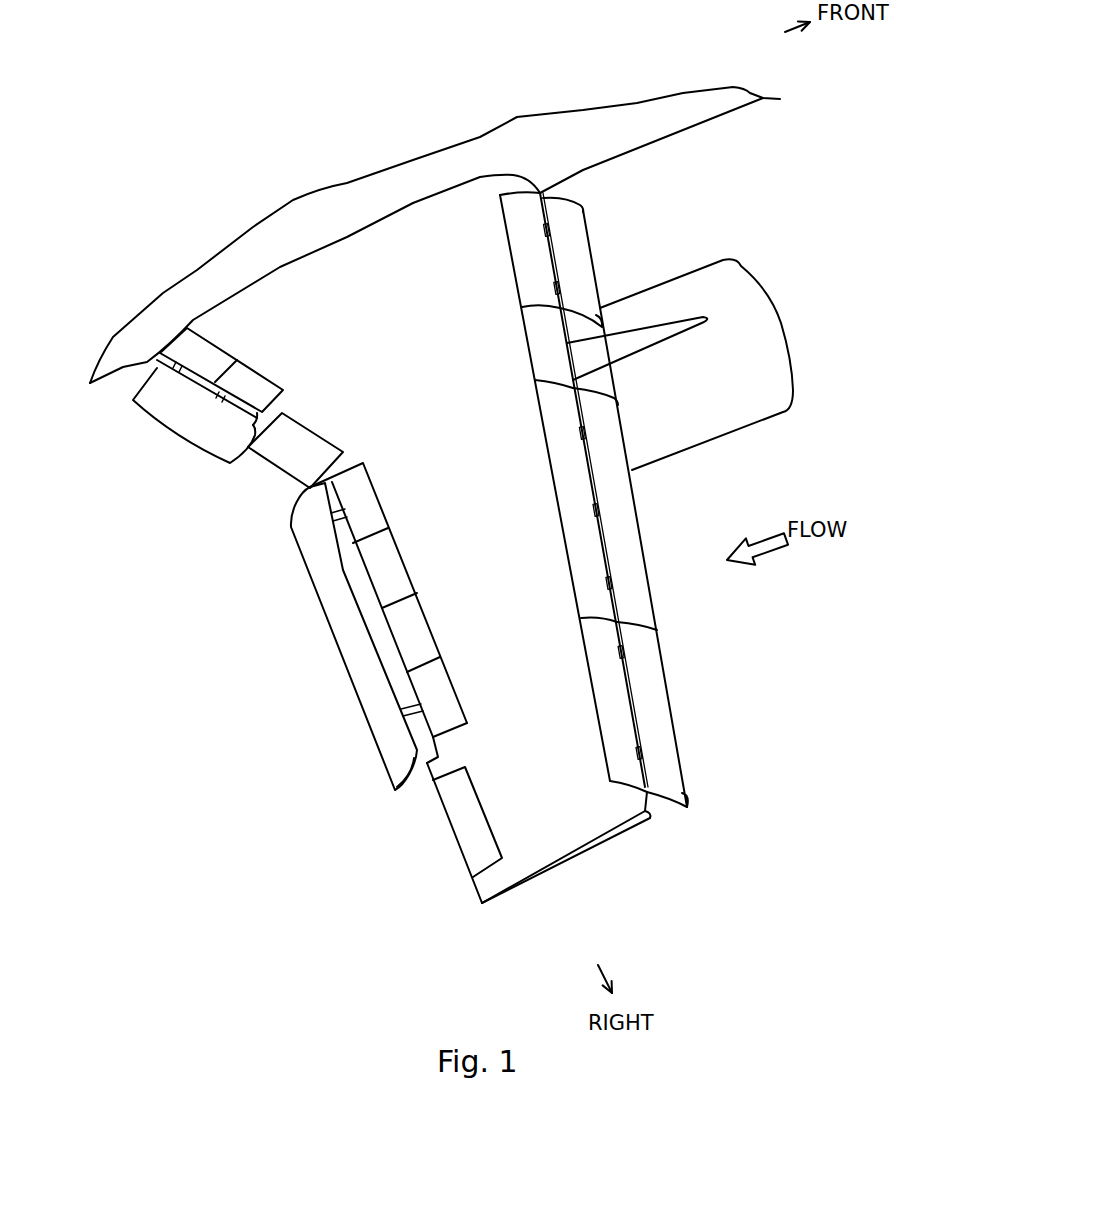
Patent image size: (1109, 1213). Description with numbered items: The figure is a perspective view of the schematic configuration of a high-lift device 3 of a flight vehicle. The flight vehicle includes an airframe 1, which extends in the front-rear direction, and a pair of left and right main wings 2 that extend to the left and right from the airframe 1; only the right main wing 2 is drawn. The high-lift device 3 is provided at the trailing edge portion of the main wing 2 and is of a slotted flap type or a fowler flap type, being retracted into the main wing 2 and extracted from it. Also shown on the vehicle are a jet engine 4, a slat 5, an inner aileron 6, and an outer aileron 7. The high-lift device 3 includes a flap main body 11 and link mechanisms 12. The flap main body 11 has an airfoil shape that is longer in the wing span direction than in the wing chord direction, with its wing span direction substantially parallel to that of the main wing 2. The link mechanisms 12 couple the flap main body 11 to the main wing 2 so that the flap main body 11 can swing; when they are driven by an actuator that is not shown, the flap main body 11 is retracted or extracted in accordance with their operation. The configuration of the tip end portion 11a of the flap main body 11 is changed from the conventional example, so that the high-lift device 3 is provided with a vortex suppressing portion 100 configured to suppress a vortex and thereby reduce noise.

The airframe 1 is at (640, 137).
The main wing 2 is at (537, 850).
The high-lift device 3 is at (390, 800).
The jet engine 4 is at (798, 408).
The slat 5 is at (597, 220).
The inner aileron 6 is at (258, 472).
The outer aileron 7 is at (448, 870).
The flap main body 11 is at (310, 545).
The tip end portion 11a is at (387, 735).
The link mechanism 12 is at (333, 522).
The vortex suppressing portion 100 is at (474, 582).